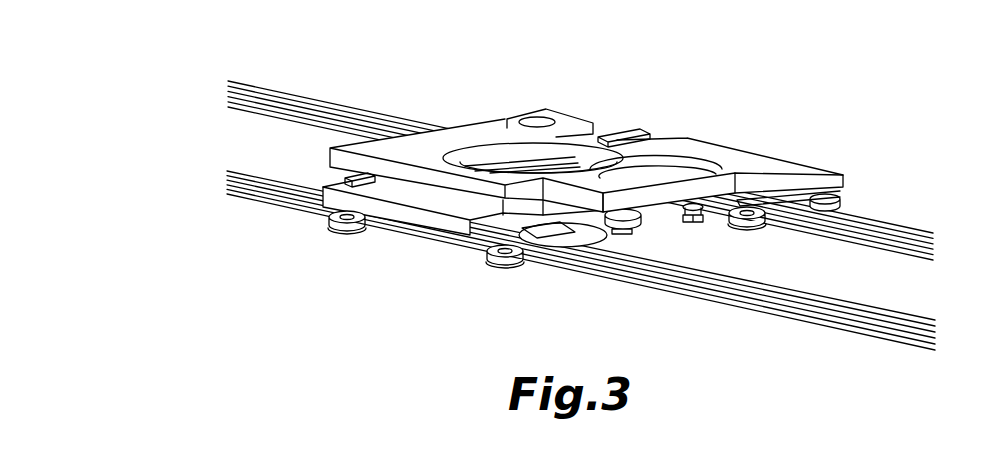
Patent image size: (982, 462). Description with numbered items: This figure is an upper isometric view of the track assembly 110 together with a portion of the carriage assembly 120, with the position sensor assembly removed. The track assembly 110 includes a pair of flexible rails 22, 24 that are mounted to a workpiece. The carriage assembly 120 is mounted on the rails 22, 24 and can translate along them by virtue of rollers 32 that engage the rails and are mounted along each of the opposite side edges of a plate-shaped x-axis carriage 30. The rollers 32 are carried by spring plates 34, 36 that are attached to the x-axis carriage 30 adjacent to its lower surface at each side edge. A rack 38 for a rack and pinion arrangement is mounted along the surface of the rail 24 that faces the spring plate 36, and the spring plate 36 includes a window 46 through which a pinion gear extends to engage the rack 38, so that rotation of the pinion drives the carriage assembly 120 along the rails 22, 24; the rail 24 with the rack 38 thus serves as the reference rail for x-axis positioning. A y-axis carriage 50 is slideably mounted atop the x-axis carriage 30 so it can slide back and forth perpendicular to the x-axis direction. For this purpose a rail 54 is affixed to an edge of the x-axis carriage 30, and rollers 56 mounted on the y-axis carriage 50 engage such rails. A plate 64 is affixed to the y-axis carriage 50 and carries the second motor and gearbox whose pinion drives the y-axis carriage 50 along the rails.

The track assembly 110 is at (290, 63).
The carriage assembly 120 is at (789, 104).
The rail 22 is at (920, 235).
The rail 24 is at (850, 328).
The x-axis carriage 30 is at (793, 174).
The rollers 32 is at (487, 262).
The spring plate 34 is at (840, 196).
The spring plate 36 is at (540, 233).
The rack 38 is at (906, 321).
The window 46 is at (607, 235).
The y-axis carriage 50 is at (472, 134).
The rail 54 is at (353, 175).
The rollers 56 is at (680, 223).
The plate 64 is at (588, 123).